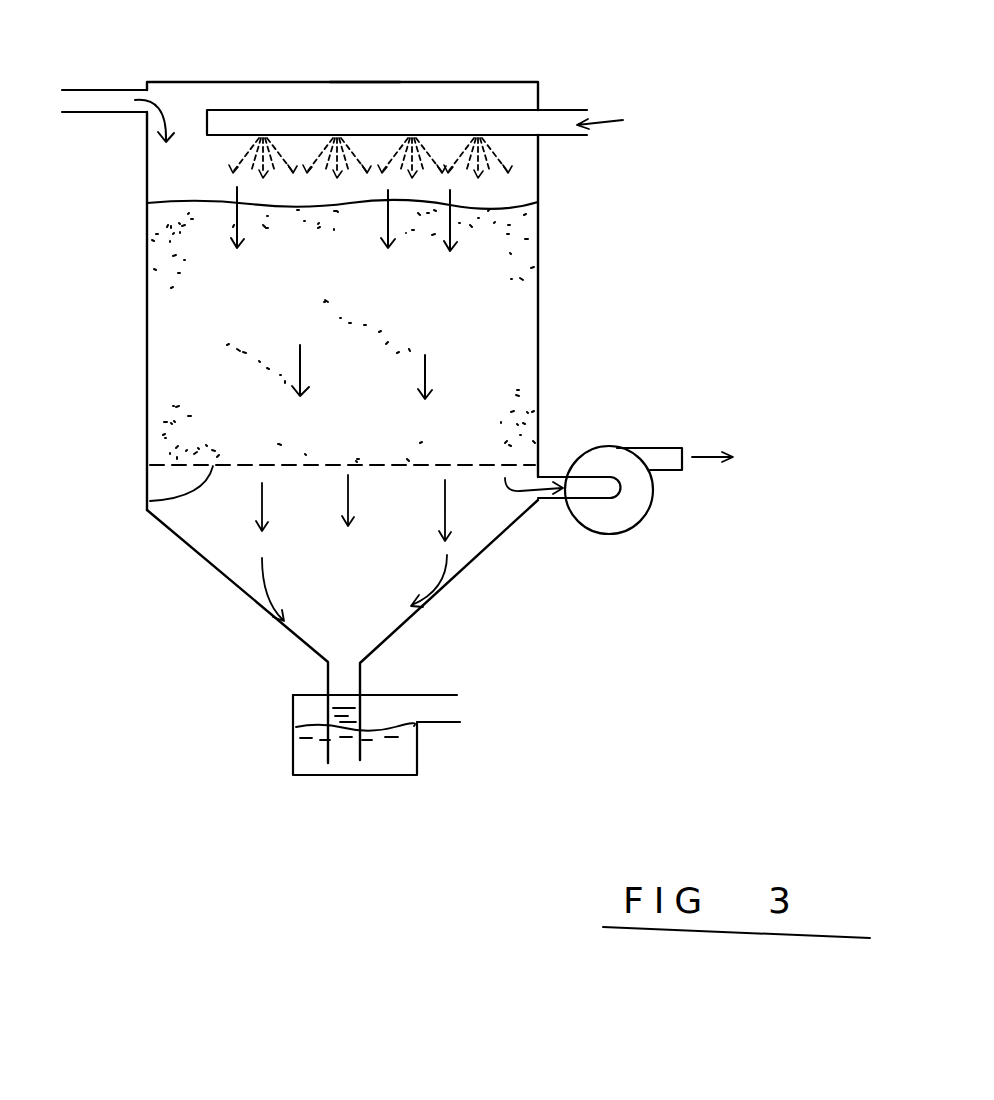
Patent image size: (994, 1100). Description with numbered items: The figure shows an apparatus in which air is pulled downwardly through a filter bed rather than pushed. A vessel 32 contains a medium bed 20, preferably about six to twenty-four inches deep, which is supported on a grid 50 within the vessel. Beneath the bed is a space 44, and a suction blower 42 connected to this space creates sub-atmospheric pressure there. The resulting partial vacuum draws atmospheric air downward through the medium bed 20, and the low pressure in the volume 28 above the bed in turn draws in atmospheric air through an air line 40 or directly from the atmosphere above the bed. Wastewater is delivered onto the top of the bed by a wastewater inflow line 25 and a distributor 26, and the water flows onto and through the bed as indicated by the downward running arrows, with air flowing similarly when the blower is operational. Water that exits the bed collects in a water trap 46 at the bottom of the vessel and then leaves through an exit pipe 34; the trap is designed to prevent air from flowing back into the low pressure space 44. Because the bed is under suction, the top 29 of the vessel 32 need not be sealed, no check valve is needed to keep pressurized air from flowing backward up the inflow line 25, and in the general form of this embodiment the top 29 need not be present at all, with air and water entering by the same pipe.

The medium bed 20 is at (478, 252).
The wastewater inflow line 25 is at (567, 110).
The distributor 26 is at (427, 110).
The volume above the medium bed 28 is at (266, 97).
The top of vessel 29 is at (360, 82).
The vessel 32 is at (545, 296).
The exit pipe 34 is at (457, 692).
The air line 40 is at (95, 88).
The suction blower 42 is at (613, 447).
The space at the bottom of the medium bed 44 is at (366, 590).
The water trap 46 is at (283, 721).
The grid 50 is at (147, 500).